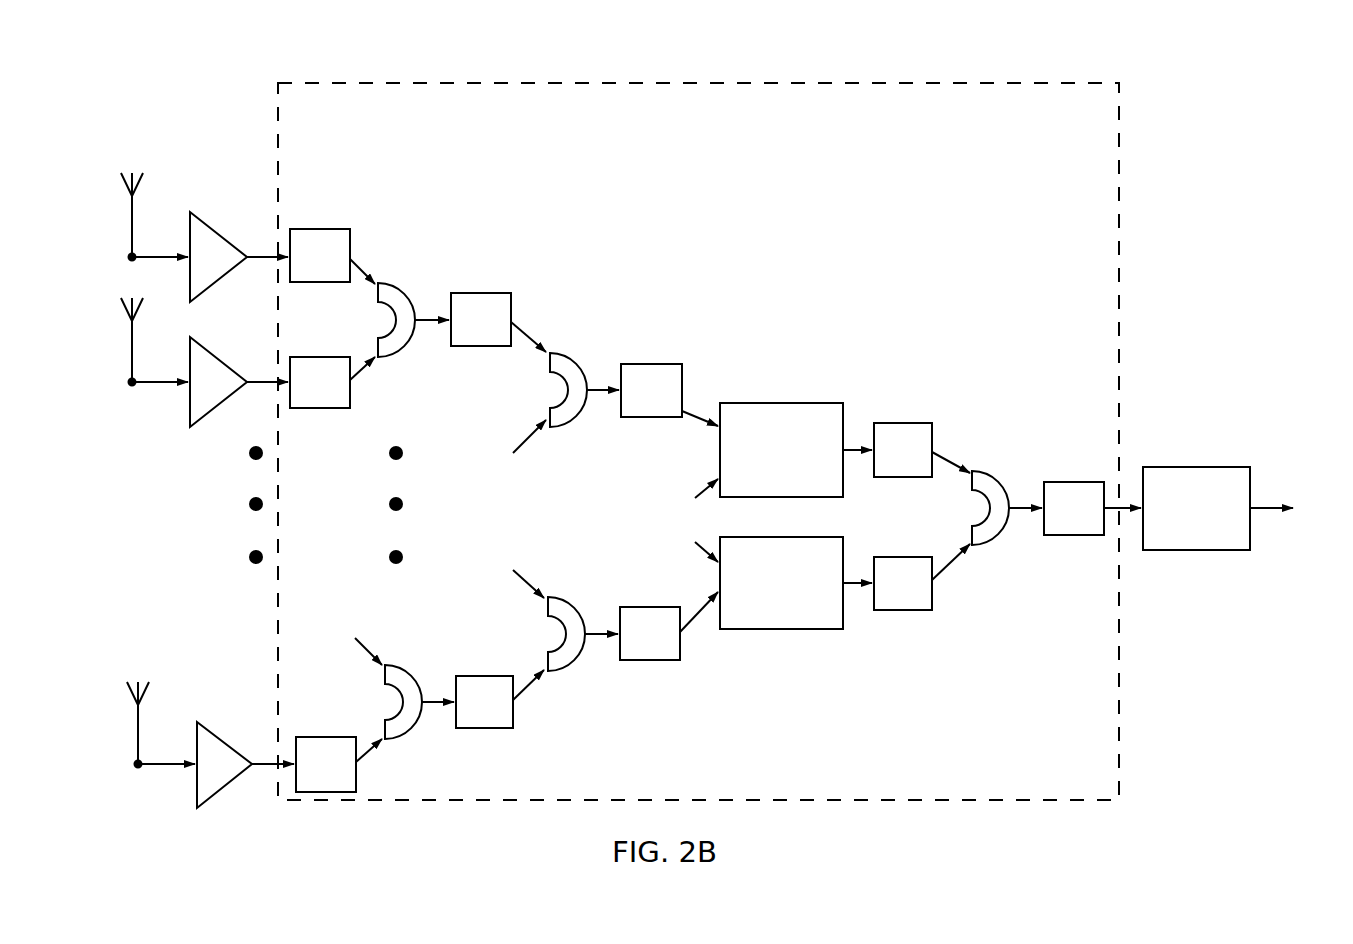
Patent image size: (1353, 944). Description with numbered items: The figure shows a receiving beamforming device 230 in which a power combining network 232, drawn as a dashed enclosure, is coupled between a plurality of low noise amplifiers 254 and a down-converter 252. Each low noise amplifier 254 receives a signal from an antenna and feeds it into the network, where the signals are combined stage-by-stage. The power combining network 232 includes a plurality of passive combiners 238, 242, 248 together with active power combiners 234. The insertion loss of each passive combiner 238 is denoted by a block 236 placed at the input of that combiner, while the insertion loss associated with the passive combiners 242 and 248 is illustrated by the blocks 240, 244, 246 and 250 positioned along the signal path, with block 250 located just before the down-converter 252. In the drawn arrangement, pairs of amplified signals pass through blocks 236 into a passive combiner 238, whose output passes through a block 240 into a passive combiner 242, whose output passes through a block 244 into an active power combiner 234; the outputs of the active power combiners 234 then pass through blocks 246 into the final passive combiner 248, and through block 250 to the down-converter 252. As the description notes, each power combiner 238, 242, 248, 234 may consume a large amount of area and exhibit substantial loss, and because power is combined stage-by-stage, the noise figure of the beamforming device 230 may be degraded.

The receiving beamforming device 230 is at (1272, 119).
The power combining network 232 is at (1104, 83).
The active power combiner 234 is at (808, 403).
The insertion loss block 236 is at (314, 229).
The passive combiner 238 is at (393, 285).
The insertion loss block 240 is at (478, 293).
The passive combiner 242 is at (570, 356).
The insertion loss block 244 is at (648, 364).
The insertion loss block 246 is at (900, 423).
The passive combiner 248 is at (985, 472).
The insertion loss block 250 is at (1060, 482).
The down-converter 252 is at (1188, 467).
The low noise amplifier 254 is at (221, 232).